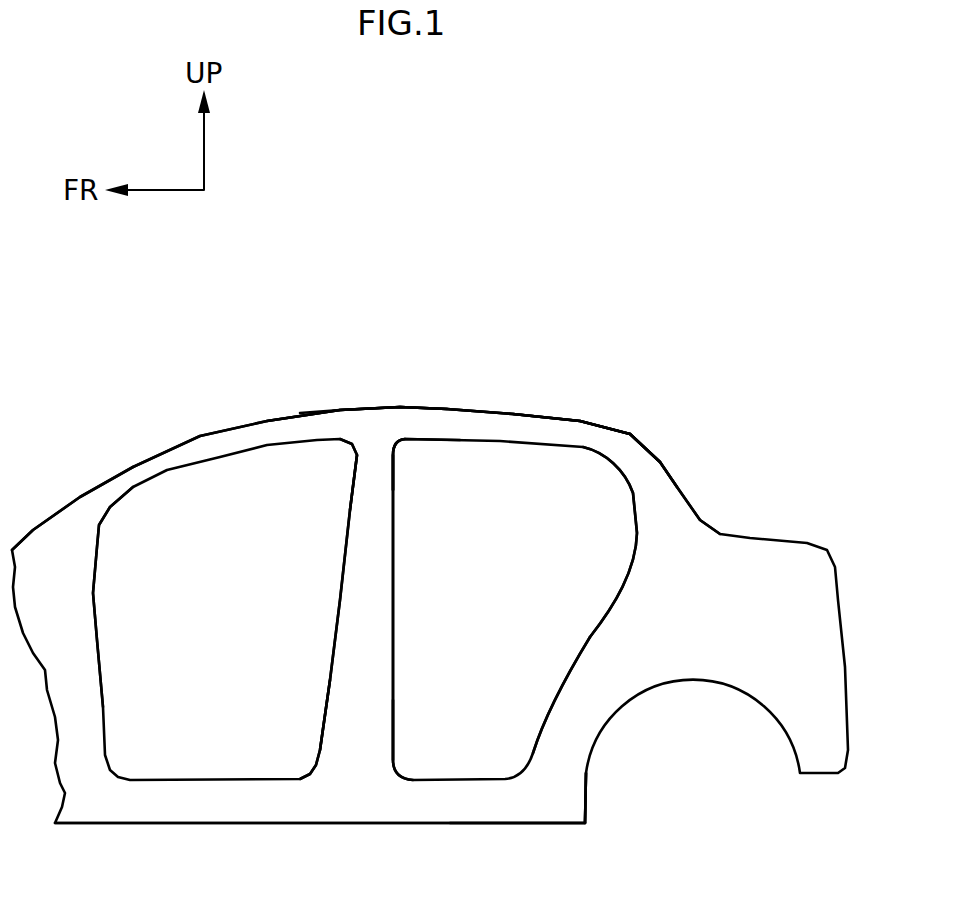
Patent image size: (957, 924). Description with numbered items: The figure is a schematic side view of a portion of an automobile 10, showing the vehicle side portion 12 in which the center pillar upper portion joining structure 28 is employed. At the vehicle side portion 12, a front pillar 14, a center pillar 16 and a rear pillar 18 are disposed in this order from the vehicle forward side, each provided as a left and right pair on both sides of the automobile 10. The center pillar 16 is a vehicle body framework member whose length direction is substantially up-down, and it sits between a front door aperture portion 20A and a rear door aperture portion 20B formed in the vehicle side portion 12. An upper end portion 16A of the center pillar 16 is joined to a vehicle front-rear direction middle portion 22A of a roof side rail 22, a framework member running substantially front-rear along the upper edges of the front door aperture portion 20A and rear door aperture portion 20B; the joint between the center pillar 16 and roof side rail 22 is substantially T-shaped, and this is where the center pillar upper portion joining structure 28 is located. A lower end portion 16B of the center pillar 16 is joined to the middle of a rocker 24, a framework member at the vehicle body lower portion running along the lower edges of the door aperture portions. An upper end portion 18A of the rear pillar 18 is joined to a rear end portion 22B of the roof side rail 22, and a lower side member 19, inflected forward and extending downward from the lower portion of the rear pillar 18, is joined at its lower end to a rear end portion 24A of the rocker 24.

The automobile 10 is at (604, 292).
The vehicle side portion 12 is at (643, 405).
The front pillar 14 is at (90, 595).
The center pillar 16 is at (394, 516).
The upper end portion of the center pillar 16A is at (363, 465).
The lower end portion of the center pillar 16B is at (328, 766).
The rear pillar 18 is at (668, 478).
The upper end portion of the rear pillar 18A is at (633, 462).
The lower side member 19 is at (560, 707).
The front door aperture portion 20A is at (220, 470).
The rear door aperture portion 20B is at (496, 456).
The roof side rail 22 is at (315, 424).
The vehicle front-rear direction middle portion of the roof side rail 22A is at (380, 424).
The vehicle front-rear direction rear end portion of the roof side rail 22B is at (577, 437).
The rocker 24 is at (231, 815).
The vehicle front-rear direction rear end portion of the rocker 24A is at (537, 810).
The center pillar upper portion joining structure 28 is at (418, 447).